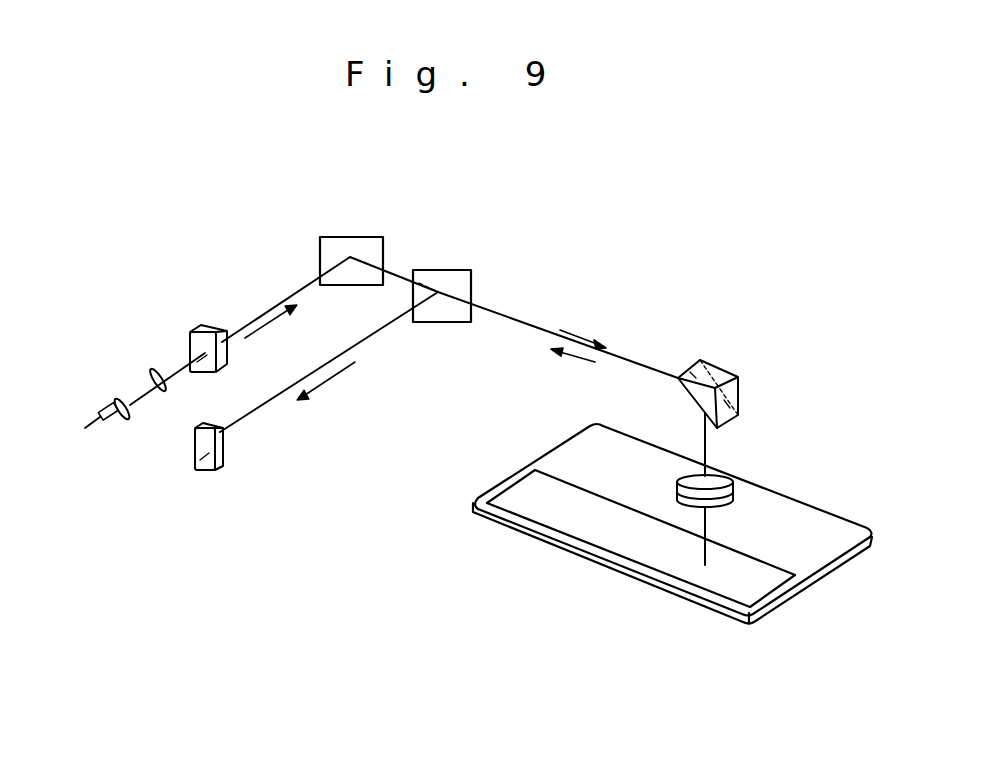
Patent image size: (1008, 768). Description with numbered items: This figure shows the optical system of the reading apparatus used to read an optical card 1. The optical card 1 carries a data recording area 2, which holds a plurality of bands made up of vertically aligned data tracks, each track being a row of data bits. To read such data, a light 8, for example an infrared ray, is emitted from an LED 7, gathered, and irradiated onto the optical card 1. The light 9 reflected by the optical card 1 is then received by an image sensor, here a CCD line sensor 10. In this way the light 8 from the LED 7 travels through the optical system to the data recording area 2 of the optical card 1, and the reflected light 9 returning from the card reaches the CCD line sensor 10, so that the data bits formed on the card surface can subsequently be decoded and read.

The optical card 1 is at (826, 548).
The data recording area 2 is at (765, 585).
The LED 7 is at (112, 400).
The light 8 is at (267, 311).
The reflected light 9 is at (268, 409).
The CCD line sensor 10 is at (200, 464).